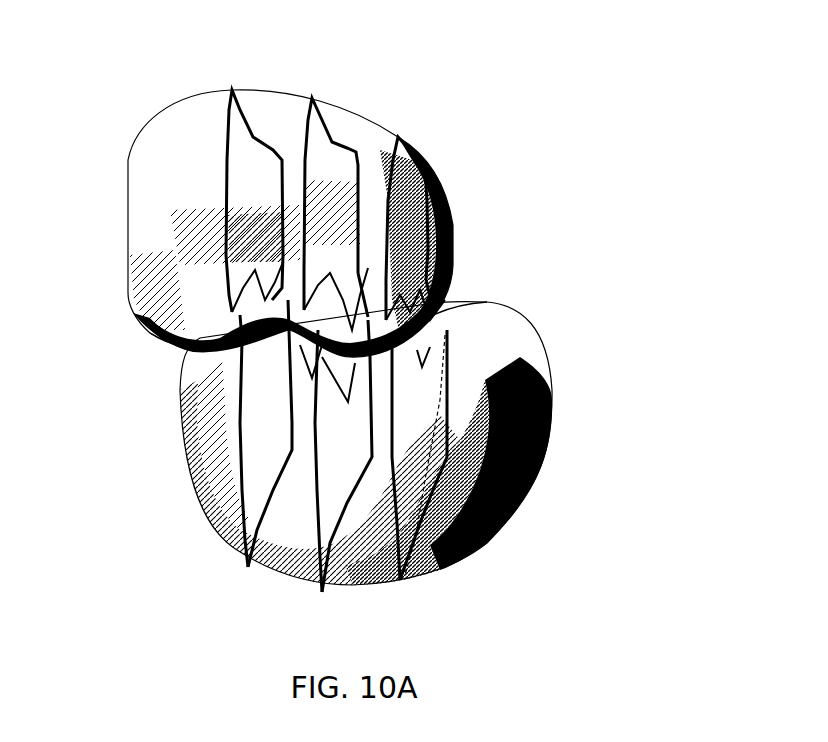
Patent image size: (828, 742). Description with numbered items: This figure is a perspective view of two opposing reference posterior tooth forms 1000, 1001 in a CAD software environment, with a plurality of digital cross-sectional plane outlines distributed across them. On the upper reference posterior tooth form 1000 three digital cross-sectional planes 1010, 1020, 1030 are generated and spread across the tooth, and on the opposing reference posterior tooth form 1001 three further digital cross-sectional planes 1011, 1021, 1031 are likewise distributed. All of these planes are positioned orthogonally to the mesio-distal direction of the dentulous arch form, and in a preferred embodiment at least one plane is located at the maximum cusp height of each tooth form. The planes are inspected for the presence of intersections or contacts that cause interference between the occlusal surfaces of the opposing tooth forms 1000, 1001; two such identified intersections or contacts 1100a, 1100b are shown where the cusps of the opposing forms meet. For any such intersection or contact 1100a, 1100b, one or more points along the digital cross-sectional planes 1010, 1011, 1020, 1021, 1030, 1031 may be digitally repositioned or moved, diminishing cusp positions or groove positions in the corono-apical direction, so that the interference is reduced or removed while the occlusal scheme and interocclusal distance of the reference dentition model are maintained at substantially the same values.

The reference posterior tooth form 1000 is at (468, 225).
The opposing reference posterior tooth form 1001 is at (572, 437).
The digital cross-sectional plane 1010 is at (226, 130).
The digital cross-sectional plane 1020 is at (303, 122).
The digital cross-sectional plane 1030 is at (433, 196).
The digital cross-sectional plane 1011 is at (235, 522).
The digital cross-sectional plane 1021 is at (313, 548).
The digital cross-sectional plane 1031 is at (420, 523).
The intersection or contact 1100a is at (222, 328).
The intersection or contact 1100b is at (427, 323).